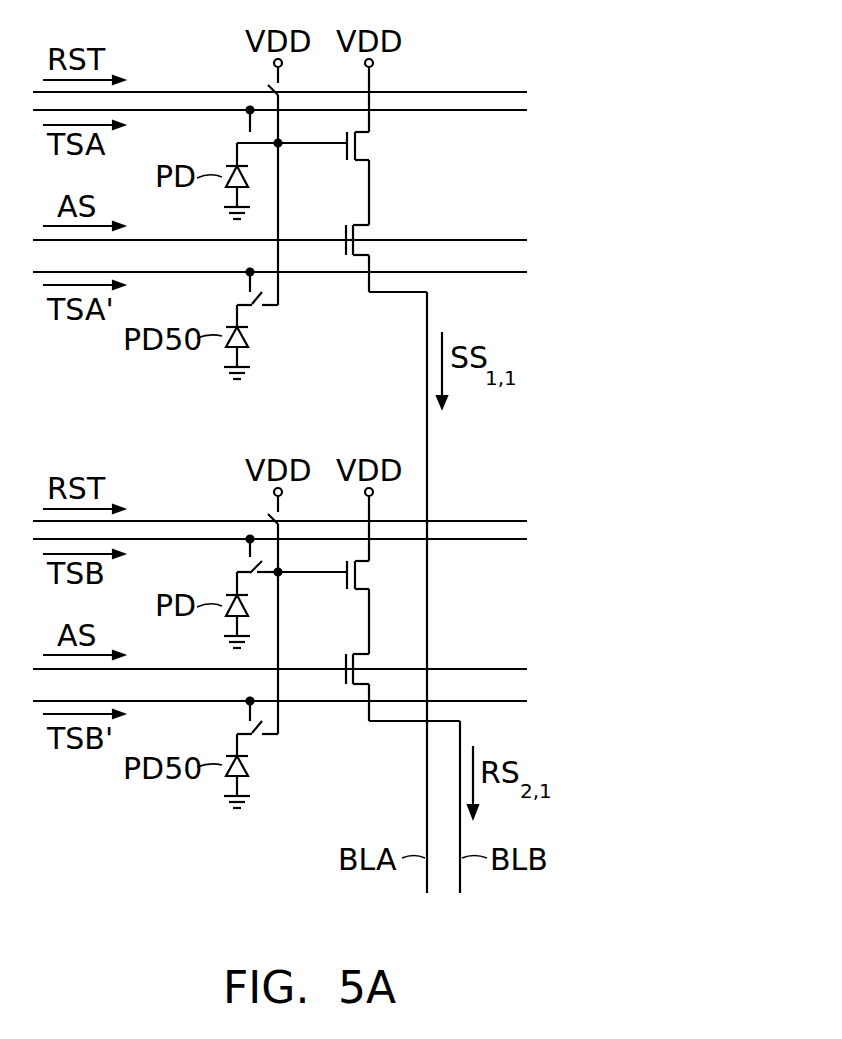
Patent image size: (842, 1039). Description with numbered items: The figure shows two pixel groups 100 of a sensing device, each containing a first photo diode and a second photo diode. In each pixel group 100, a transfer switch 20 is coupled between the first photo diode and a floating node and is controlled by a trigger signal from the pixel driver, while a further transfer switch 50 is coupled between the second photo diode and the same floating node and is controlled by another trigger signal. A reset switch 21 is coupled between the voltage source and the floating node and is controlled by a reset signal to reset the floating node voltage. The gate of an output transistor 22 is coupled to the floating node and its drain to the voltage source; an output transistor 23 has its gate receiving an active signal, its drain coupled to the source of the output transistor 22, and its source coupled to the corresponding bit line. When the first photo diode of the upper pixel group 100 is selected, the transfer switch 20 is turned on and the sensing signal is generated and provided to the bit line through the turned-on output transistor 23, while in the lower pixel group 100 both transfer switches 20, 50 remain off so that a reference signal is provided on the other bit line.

The transfer switch 20 is at (250, 138).
The reset switch 21 is at (268, 84).
The output transistor 22 is at (363, 143).
The output transistor 23 is at (362, 233).
The transfer switch 50 is at (250, 299).
The pixel group 100 is at (478, 170).